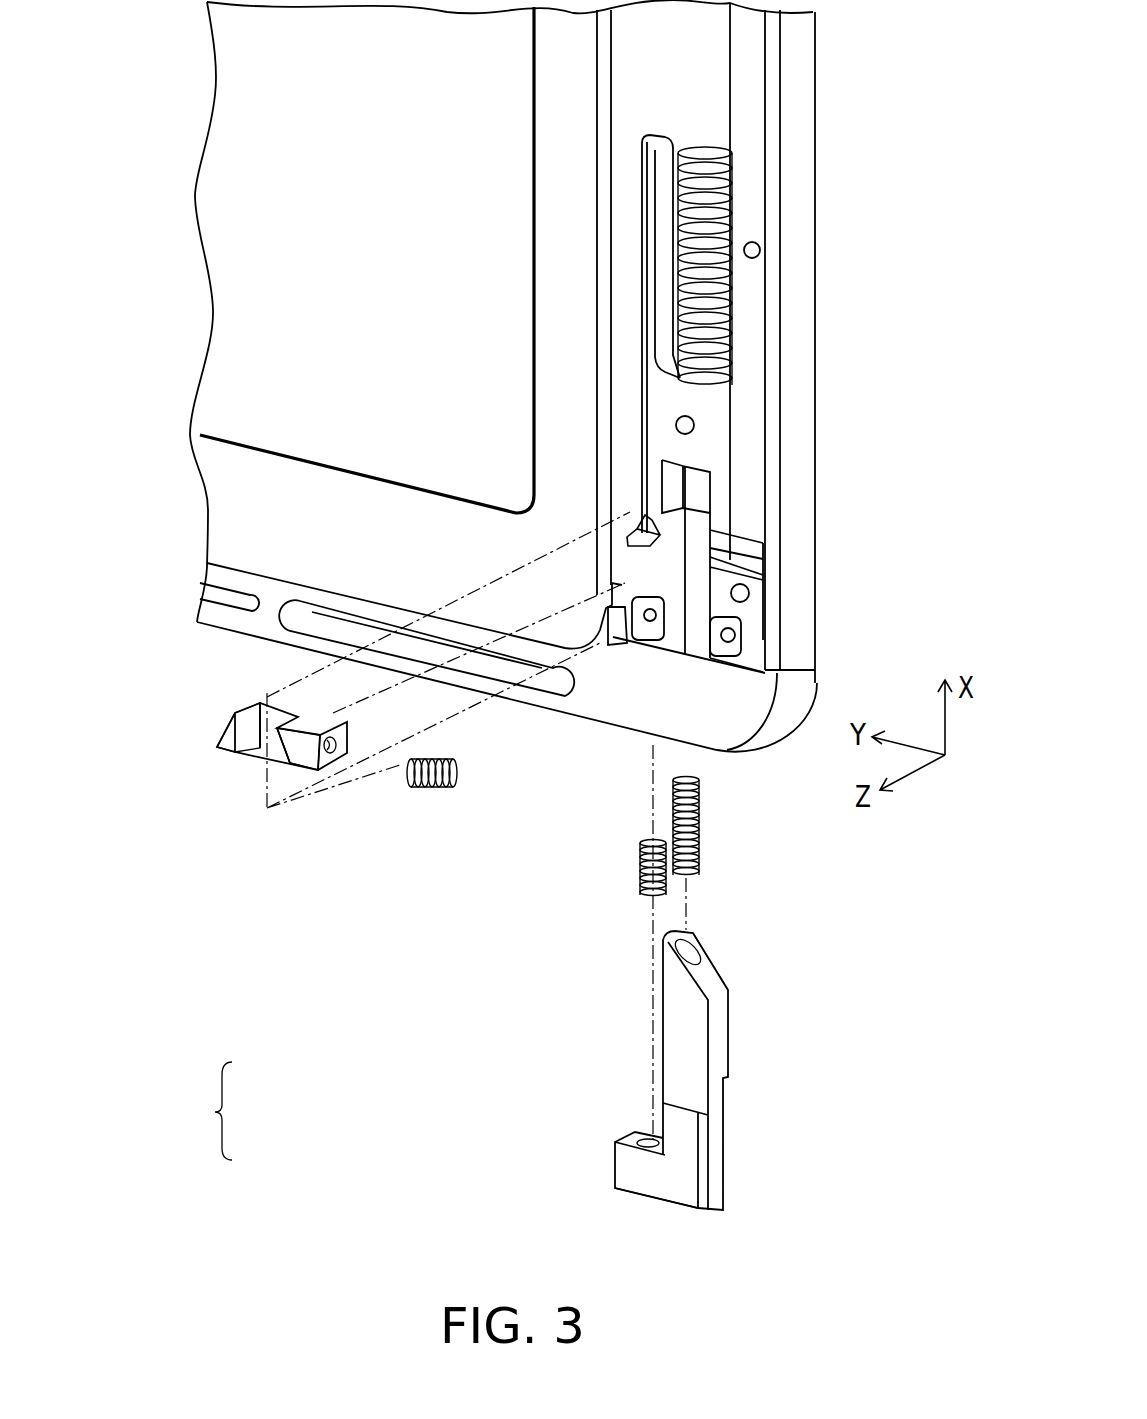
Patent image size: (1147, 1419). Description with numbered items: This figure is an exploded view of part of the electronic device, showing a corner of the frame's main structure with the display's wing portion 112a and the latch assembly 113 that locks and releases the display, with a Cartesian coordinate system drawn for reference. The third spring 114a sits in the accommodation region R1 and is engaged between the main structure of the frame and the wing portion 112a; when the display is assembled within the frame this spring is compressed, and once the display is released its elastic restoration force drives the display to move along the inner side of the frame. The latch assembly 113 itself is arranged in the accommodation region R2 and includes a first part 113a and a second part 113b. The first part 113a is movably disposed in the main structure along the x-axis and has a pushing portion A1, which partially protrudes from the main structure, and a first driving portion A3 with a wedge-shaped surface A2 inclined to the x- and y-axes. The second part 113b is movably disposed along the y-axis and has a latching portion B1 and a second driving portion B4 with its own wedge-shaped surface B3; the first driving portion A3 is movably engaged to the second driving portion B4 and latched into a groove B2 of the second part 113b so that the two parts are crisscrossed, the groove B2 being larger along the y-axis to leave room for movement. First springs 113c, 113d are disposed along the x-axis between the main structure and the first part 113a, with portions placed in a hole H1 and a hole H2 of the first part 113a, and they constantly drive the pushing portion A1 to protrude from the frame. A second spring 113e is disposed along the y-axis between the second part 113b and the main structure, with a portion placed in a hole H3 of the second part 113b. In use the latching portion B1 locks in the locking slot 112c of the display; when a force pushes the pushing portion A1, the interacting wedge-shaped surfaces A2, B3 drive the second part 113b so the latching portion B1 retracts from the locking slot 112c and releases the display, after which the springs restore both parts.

The wing portion 112a is at (700, 100).
The locking slot 112c is at (632, 535).
The third spring 114a is at (733, 215).
The accommodation region R1 is at (663, 222).
The accommodation region R2 is at (698, 566).
The latch assembly 113 is at (266, 1112).
The first part 113a is at (725, 1077).
The second part 113b is at (236, 767).
The first spring 113c is at (700, 828).
The first spring 113d is at (638, 864).
The second spring 113e is at (423, 790).
The latching portion B1 is at (229, 722).
The groove B2 is at (262, 750).
The wedge-shaped surface B3 is at (290, 766).
The second driving portion B4 is at (307, 752).
The hole H3 is at (334, 753).
The hole H1 is at (693, 953).
The hole H2 is at (628, 1136).
The pushing portion A1 is at (660, 1197).
The wedge-shaped surface A2 is at (711, 980).
The first driving portion A3 is at (688, 1022).